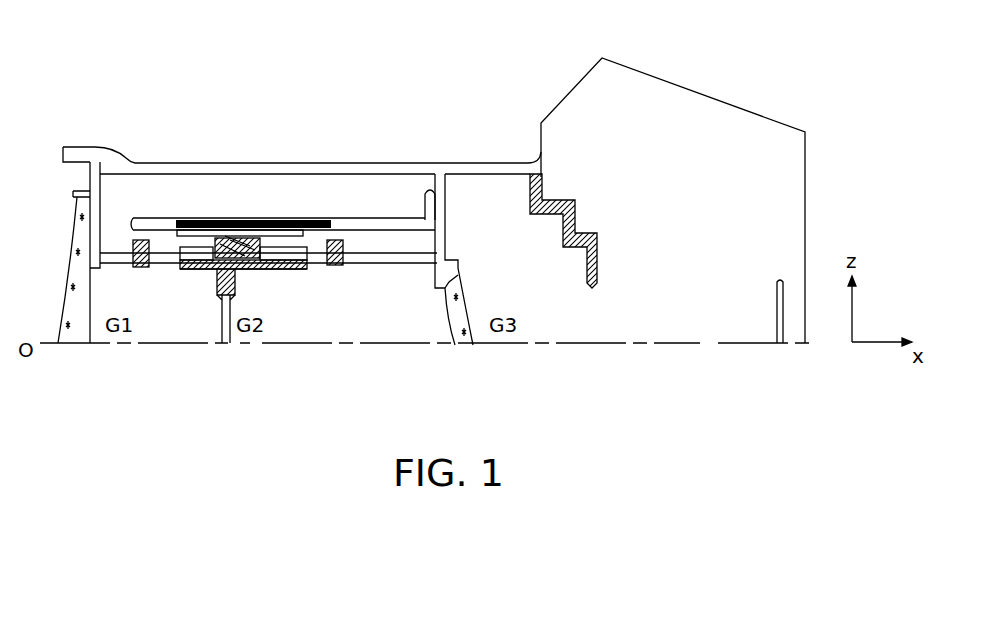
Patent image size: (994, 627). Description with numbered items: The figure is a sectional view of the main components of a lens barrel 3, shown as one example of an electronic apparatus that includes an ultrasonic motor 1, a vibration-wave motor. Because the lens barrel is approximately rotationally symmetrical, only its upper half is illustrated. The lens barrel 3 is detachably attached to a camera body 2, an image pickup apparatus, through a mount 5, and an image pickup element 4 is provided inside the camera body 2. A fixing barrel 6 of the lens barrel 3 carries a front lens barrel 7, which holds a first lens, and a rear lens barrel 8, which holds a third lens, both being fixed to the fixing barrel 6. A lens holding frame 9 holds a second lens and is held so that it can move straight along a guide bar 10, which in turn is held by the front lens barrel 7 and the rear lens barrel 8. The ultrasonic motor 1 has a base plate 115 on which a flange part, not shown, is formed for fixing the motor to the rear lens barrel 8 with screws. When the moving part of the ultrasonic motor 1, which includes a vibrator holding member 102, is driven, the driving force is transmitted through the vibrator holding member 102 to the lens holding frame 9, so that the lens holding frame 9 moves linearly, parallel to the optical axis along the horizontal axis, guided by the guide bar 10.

The ultrasonic motor 1 is at (292, 270).
The camera body 2 is at (586, 72).
The lens barrel 3 is at (338, 66).
The image pickup element 4 is at (775, 305).
The mount 5 is at (534, 172).
The fixing barrel 6 is at (490, 163).
The front lens barrel 7 is at (93, 162).
The rear lens barrel 8 is at (425, 188).
The lens holding frame 9 is at (215, 300).
The guide bar 10 is at (380, 250).
The vibrator holding member 102 is at (205, 247).
The base plate 115 is at (141, 243).